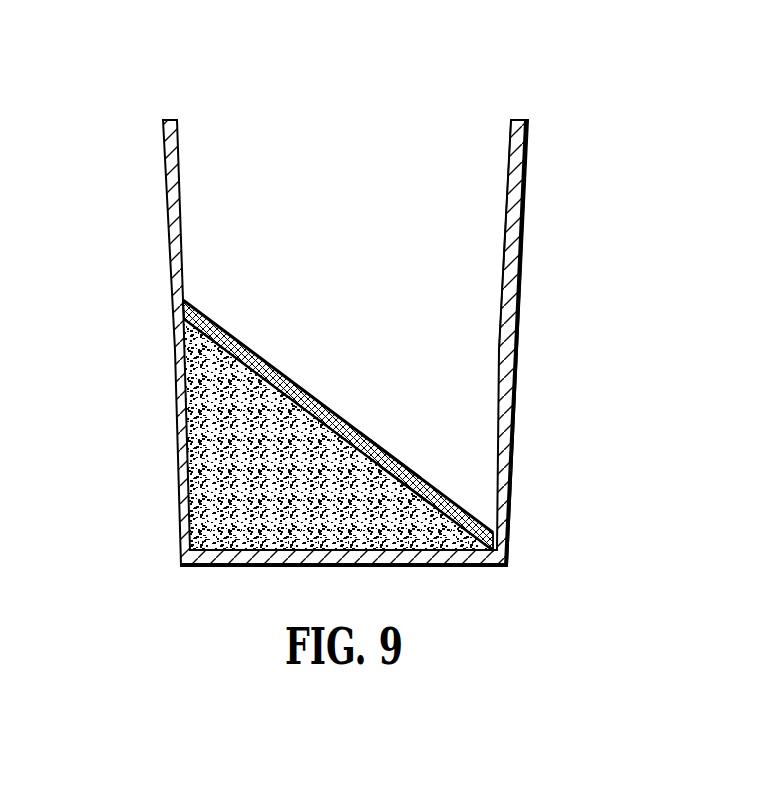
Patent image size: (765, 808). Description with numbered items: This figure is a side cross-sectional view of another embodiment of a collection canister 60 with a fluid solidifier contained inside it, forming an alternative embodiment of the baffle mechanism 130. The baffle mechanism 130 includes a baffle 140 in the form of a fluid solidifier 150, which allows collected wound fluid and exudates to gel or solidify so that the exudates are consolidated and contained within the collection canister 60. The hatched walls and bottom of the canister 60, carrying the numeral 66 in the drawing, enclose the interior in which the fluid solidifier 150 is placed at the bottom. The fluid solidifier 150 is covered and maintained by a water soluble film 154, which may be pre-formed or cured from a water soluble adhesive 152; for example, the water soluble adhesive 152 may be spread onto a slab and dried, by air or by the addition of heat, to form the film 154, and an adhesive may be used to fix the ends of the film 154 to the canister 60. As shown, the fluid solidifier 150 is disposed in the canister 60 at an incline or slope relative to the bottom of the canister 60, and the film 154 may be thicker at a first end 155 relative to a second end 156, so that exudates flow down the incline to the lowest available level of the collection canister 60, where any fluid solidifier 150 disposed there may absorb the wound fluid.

The collection canister 60 is at (183, 505).
The crucible wall 66 is at (517, 266).
The baffle mechanism 130 is at (296, 368).
The baffle 140 is at (230, 368).
The fluid solidifier 150 is at (398, 566).
The water soluble adhesive 152 is at (383, 445).
The water soluble film 154 is at (402, 466).
The first end 155 is at (193, 308).
The second end 156 is at (470, 514).